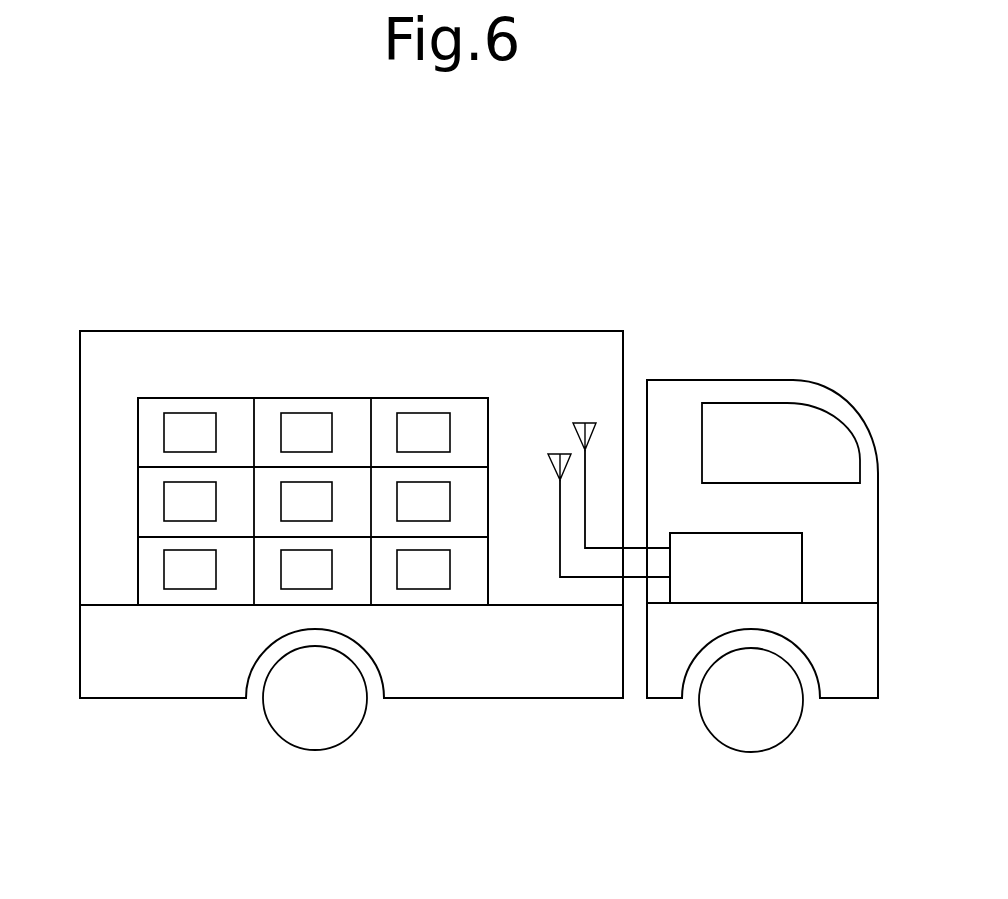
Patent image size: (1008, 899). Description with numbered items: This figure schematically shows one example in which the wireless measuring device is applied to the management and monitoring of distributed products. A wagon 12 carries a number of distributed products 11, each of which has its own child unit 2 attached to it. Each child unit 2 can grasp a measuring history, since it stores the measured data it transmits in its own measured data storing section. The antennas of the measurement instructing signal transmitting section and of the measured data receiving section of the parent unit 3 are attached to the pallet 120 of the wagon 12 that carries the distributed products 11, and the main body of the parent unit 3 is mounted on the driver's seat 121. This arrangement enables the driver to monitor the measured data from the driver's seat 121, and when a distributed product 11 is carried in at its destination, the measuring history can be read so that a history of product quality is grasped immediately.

The wagon 12 is at (557, 312).
The pallet 120 is at (351, 479).
The driver's seat 121 is at (762, 539).
The parent unit 3 is at (675, 513).
The distributed product 11 is at (313, 501).
The child unit 2 is at (307, 501).